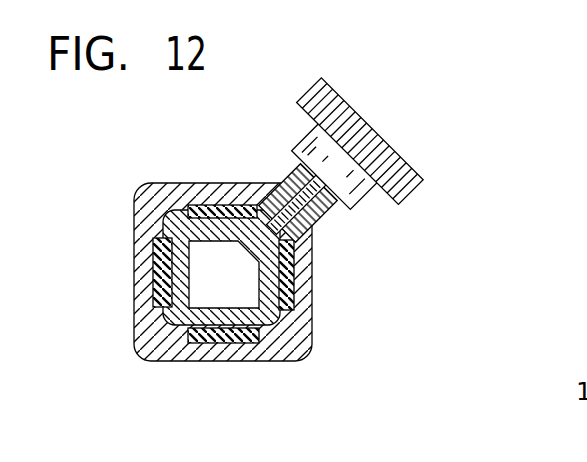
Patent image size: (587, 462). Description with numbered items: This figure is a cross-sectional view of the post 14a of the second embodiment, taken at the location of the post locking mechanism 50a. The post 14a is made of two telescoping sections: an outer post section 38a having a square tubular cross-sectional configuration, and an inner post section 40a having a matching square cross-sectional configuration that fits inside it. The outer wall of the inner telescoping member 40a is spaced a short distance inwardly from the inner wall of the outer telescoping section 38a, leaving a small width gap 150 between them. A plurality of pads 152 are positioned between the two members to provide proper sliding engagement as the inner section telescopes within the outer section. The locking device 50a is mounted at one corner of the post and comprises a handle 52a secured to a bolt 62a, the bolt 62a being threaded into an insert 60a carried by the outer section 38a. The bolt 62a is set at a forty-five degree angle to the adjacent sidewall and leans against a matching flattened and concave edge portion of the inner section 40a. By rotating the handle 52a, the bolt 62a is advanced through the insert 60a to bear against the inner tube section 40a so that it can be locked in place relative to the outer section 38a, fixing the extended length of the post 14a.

The post 14a is at (251, 247).
The outer telescoping post section 38a is at (302, 331).
The inner telescoping post section 40a is at (152, 334).
The post locking mechanism 50a is at (320, 179).
The handle 52a is at (346, 154).
The insert 60a is at (298, 203).
The bolt 62a is at (296, 204).
The gap 150 is at (288, 333).
The pads 152 is at (158, 265).